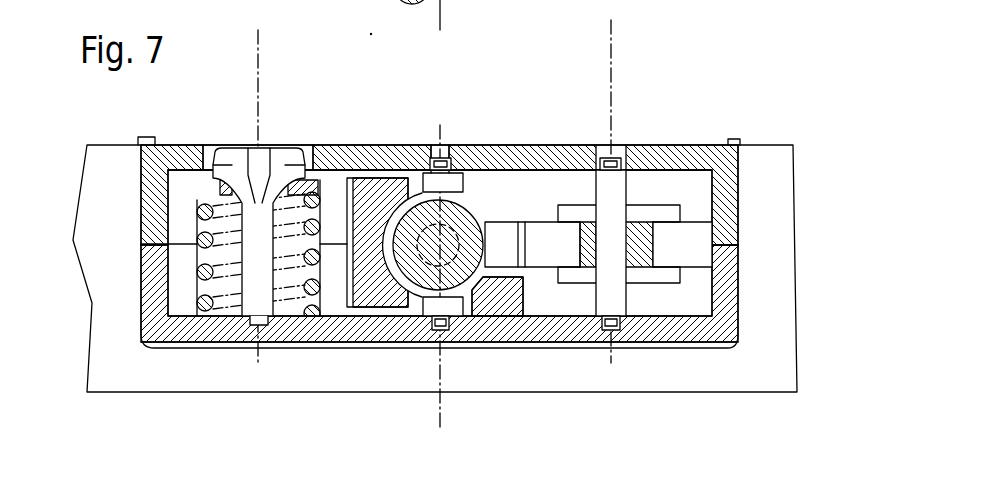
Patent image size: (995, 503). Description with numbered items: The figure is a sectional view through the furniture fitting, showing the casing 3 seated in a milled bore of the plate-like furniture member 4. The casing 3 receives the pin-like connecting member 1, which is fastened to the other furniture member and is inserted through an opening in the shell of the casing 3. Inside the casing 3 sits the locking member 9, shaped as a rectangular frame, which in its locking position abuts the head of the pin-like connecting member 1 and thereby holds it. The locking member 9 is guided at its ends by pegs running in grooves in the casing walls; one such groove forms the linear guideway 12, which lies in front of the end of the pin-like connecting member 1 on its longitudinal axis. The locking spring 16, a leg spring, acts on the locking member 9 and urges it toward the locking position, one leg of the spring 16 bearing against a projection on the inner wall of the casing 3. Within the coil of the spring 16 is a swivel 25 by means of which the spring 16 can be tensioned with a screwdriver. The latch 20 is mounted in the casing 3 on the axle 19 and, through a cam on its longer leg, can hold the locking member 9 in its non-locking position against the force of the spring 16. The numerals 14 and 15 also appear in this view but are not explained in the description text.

The pin-like connecting member 1 is at (418, 270).
The casing 3 is at (439, 271).
The plate-like furniture member 4 is at (720, 370).
The locking member 9 is at (373, 278).
The guideway 12 is at (449, 158).
The cover plate 14 is at (496, 159).
The support step 15 is at (537, 323).
The locking spring 16 is at (308, 295).
The axle 19 is at (615, 288).
The latch 20 is at (692, 238).
The swivel 25 is at (252, 280).